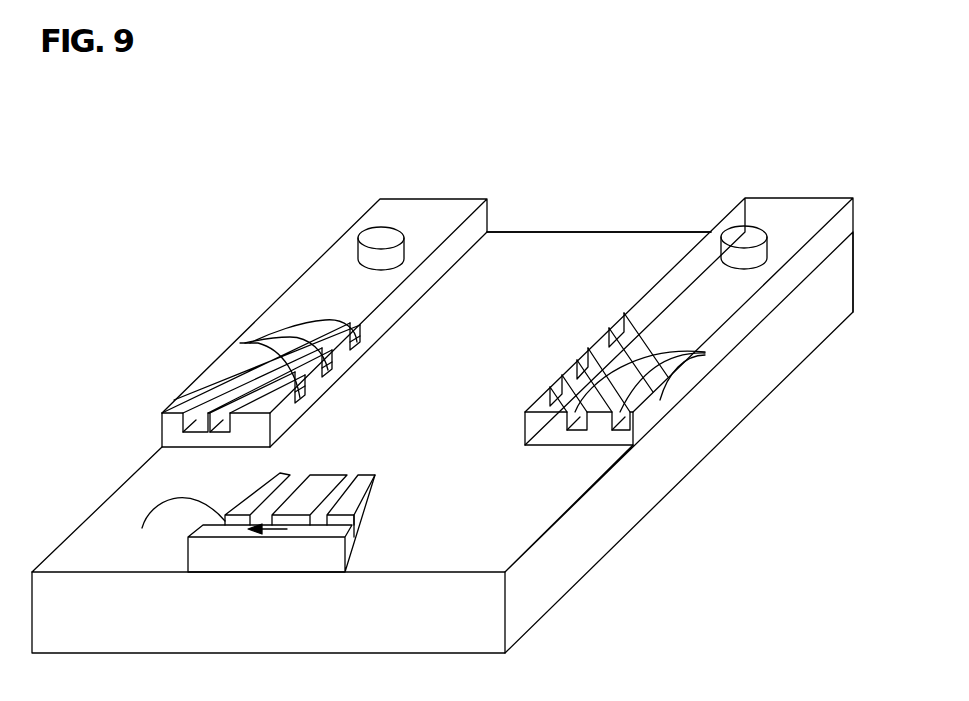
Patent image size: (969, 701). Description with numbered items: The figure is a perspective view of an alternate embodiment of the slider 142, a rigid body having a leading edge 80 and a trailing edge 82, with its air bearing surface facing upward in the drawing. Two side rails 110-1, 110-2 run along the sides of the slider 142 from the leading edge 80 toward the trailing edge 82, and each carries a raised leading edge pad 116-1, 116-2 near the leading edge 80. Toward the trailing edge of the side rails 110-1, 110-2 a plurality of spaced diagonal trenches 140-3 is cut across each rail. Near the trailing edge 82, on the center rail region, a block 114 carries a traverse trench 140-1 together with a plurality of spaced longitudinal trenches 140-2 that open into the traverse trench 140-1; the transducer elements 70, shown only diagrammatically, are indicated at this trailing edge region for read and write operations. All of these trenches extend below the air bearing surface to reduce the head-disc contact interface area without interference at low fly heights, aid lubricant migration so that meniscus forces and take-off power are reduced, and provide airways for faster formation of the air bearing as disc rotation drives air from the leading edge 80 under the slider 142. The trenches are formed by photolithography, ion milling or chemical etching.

The transducer elements 70 is at (248, 532).
The leading edge 80 is at (521, 232).
The trailing edge 82 is at (414, 574).
The side rail 110-1 is at (328, 273).
The side rail 110-2 is at (798, 215).
The fiber holder block 114 is at (372, 508).
The leading edge pad 116-1 is at (383, 237).
The leading edge pad 116-2 is at (748, 232).
The traverse trench 140-1 is at (159, 522).
The longitudinal trenches 140-2 is at (355, 482).
The diagonal trenches 140-3 is at (255, 343).
The slider 142 is at (585, 232).